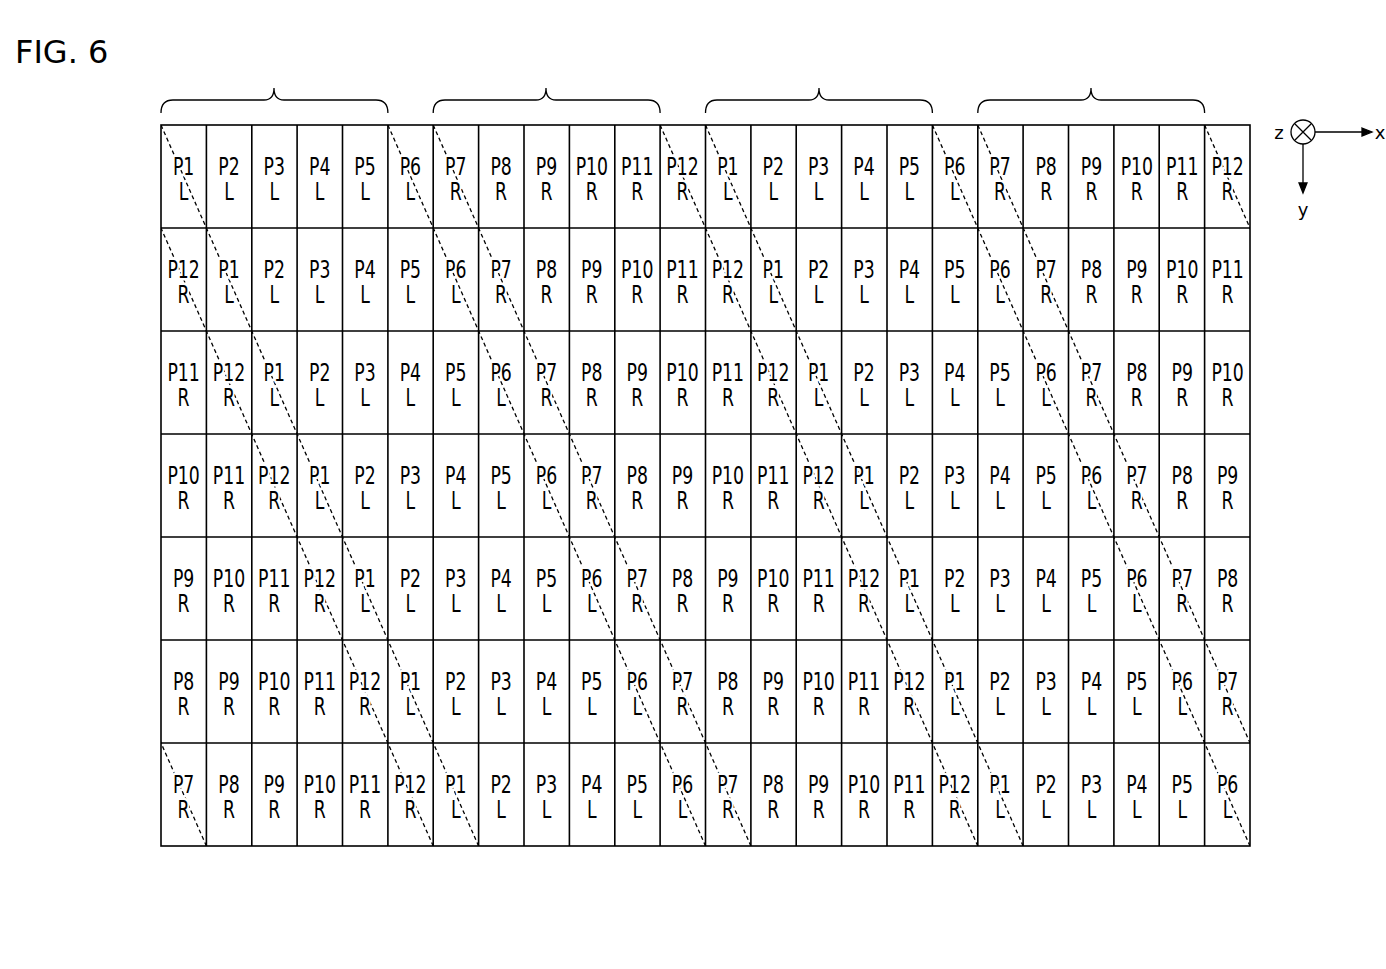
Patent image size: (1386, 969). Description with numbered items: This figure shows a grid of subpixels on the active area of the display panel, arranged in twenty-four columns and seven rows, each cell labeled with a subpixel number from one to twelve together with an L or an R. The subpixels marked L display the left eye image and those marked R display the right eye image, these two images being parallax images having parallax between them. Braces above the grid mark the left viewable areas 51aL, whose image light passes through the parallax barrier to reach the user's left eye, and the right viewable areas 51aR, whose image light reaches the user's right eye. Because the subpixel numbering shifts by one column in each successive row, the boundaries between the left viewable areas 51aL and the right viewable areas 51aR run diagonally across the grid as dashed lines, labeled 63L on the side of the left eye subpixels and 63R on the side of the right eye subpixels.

The left viewable areas 51aL is at (546, 87).
The right viewable areas 51aR is at (818, 87).
The left-eye region boundary line 63L is at (1241, 827).
The right-eye region boundary line 63R is at (1240, 719).